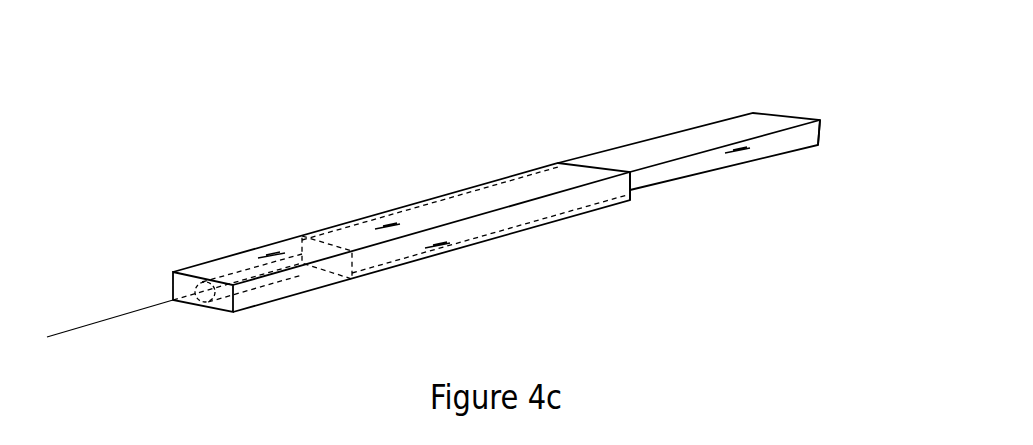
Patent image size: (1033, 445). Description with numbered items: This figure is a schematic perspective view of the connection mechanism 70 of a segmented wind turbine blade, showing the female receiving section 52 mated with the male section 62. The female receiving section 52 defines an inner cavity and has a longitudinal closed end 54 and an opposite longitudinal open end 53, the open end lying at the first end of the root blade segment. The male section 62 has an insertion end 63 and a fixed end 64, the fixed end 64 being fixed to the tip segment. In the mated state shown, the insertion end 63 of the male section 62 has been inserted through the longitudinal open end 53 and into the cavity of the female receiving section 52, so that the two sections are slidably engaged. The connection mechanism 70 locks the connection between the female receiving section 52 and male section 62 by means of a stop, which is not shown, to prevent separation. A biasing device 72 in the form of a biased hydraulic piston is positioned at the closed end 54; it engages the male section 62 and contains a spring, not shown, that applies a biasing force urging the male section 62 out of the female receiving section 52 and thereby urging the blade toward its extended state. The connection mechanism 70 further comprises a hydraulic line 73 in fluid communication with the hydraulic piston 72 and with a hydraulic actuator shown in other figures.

The connection mechanism 70 is at (507, 146).
The female receiving section 52 is at (368, 218).
The longitudinal open end 53 is at (603, 168).
The male section 62 is at (721, 133).
The fixed end 64 is at (807, 118).
The biasing device 72 is at (245, 272).
The hydraulic line 73 is at (150, 306).
The longitudinal closed end 54 is at (225, 295).
The insertion end 63 is at (342, 263).